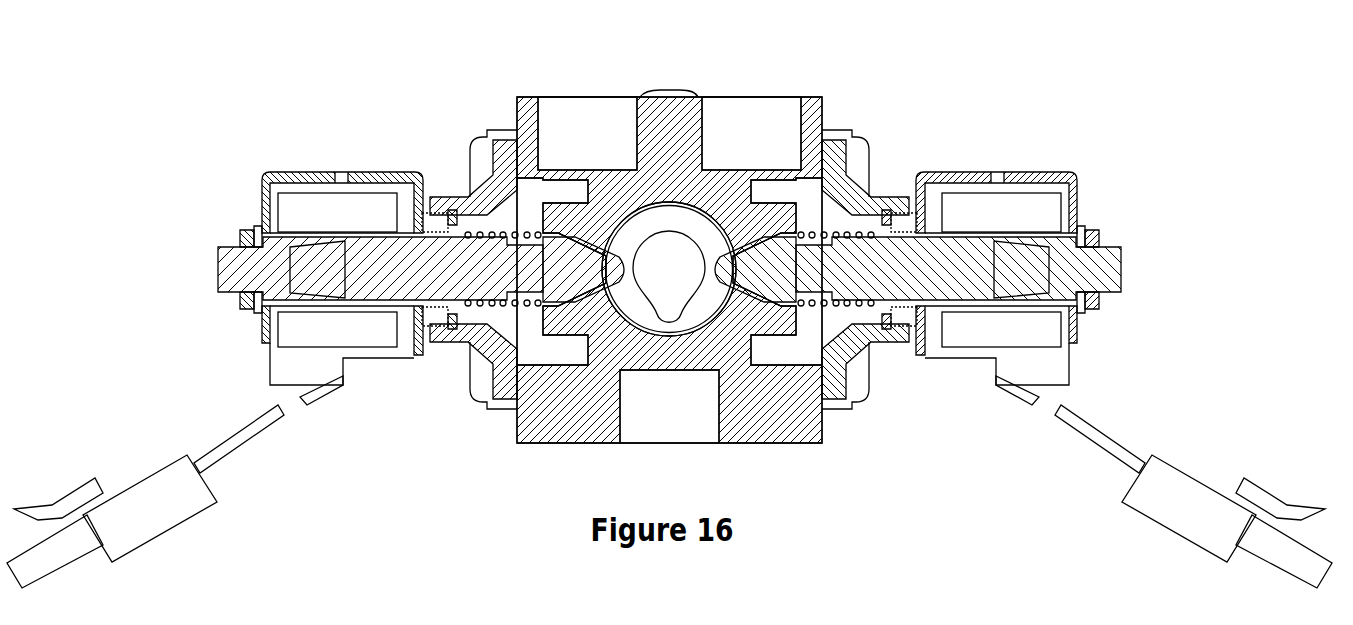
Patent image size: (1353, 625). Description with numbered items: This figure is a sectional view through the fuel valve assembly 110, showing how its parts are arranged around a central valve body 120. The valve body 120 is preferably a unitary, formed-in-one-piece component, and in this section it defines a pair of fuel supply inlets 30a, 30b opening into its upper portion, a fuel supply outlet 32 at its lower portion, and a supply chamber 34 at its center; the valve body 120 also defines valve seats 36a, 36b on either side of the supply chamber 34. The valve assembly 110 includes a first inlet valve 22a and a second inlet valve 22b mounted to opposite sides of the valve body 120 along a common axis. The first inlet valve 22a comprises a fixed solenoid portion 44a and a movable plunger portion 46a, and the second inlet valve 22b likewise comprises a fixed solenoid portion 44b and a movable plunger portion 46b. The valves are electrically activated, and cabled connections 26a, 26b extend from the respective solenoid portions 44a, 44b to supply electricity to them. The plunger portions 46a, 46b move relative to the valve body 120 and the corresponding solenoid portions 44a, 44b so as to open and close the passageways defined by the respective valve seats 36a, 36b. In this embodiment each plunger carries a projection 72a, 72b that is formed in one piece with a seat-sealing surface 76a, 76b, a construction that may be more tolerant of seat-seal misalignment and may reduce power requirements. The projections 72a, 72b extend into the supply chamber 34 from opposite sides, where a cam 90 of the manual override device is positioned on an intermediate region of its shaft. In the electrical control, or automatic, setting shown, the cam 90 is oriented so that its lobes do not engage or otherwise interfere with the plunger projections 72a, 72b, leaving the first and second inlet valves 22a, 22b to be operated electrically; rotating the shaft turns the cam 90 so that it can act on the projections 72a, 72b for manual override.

The fuel valve assembly 110 is at (669, 266).
The valve body 120 is at (648, 86).
The fuel supply outlet 32 is at (680, 407).
The fuel supply inlet 30a is at (590, 132).
The fuel supply inlet 30b is at (750, 142).
The supply chamber 34 is at (660, 226).
The cam 90 is at (656, 281).
The projection 72a is at (598, 268).
The projection 72b is at (740, 280).
The valve seat 36a is at (580, 233).
The valve seat 36b is at (785, 220).
The seat-sealing surface 76a is at (552, 302).
The seat-sealing surface 76b is at (782, 285).
The first inlet valve 22a is at (324, 249).
The second inlet valve 22b is at (1031, 259).
The fixed solenoid portion 44a is at (287, 177).
The fixed solenoid portion 44b is at (1077, 176).
The movable plunger portion 46a is at (440, 330).
The movable plunger portion 46b is at (885, 335).
The cabled connection 26a is at (217, 445).
The cabled connection 26b is at (1110, 433).